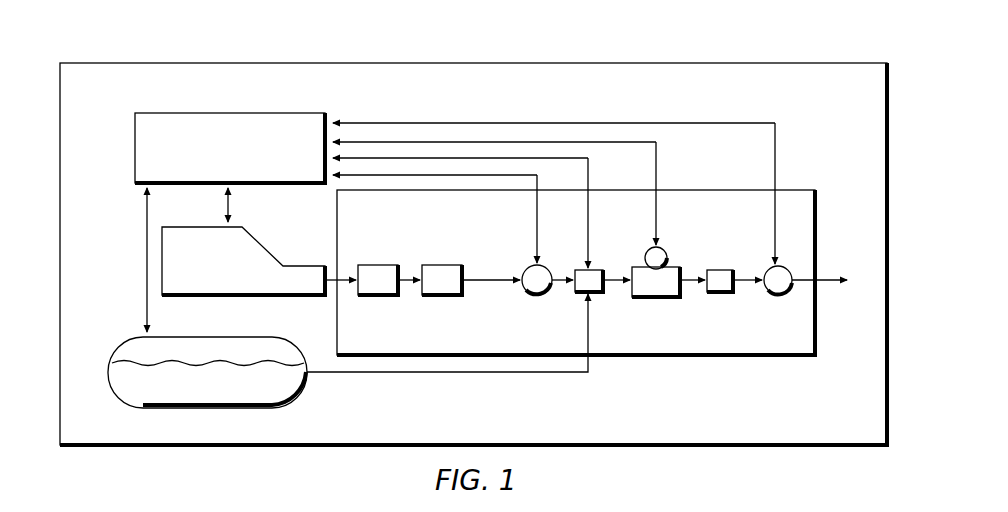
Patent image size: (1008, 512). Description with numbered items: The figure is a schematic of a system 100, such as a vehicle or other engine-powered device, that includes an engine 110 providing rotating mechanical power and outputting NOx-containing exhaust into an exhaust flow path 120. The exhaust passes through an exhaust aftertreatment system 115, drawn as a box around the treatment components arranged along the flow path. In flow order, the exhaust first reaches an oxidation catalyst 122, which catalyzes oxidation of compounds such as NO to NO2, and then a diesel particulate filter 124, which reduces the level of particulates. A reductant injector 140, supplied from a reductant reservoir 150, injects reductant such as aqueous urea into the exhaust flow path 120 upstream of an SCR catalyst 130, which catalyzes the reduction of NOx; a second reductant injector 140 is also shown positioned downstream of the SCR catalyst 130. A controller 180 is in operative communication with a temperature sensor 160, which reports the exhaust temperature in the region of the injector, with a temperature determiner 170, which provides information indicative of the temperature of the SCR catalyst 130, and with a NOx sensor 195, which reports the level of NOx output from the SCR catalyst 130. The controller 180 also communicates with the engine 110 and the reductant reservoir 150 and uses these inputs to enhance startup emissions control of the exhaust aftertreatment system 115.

The system 100 is at (115, 48).
The engine 110 is at (259, 261).
The exhaust aftertreatment system 115 is at (712, 357).
The exhaust flow path 120 is at (340, 284).
The oxidation catalyst 122 is at (380, 263).
The diesel particulate filter 124 is at (440, 263).
The SCR catalyst 130 is at (655, 300).
The reductant injector 140 is at (582, 268).
The reductant reservoir 150 is at (128, 338).
The temperature sensor 160 is at (524, 295).
The temperature determiner 170 is at (645, 252).
The controller 180 is at (455, 222).
The NOx sensor 195 is at (770, 268).